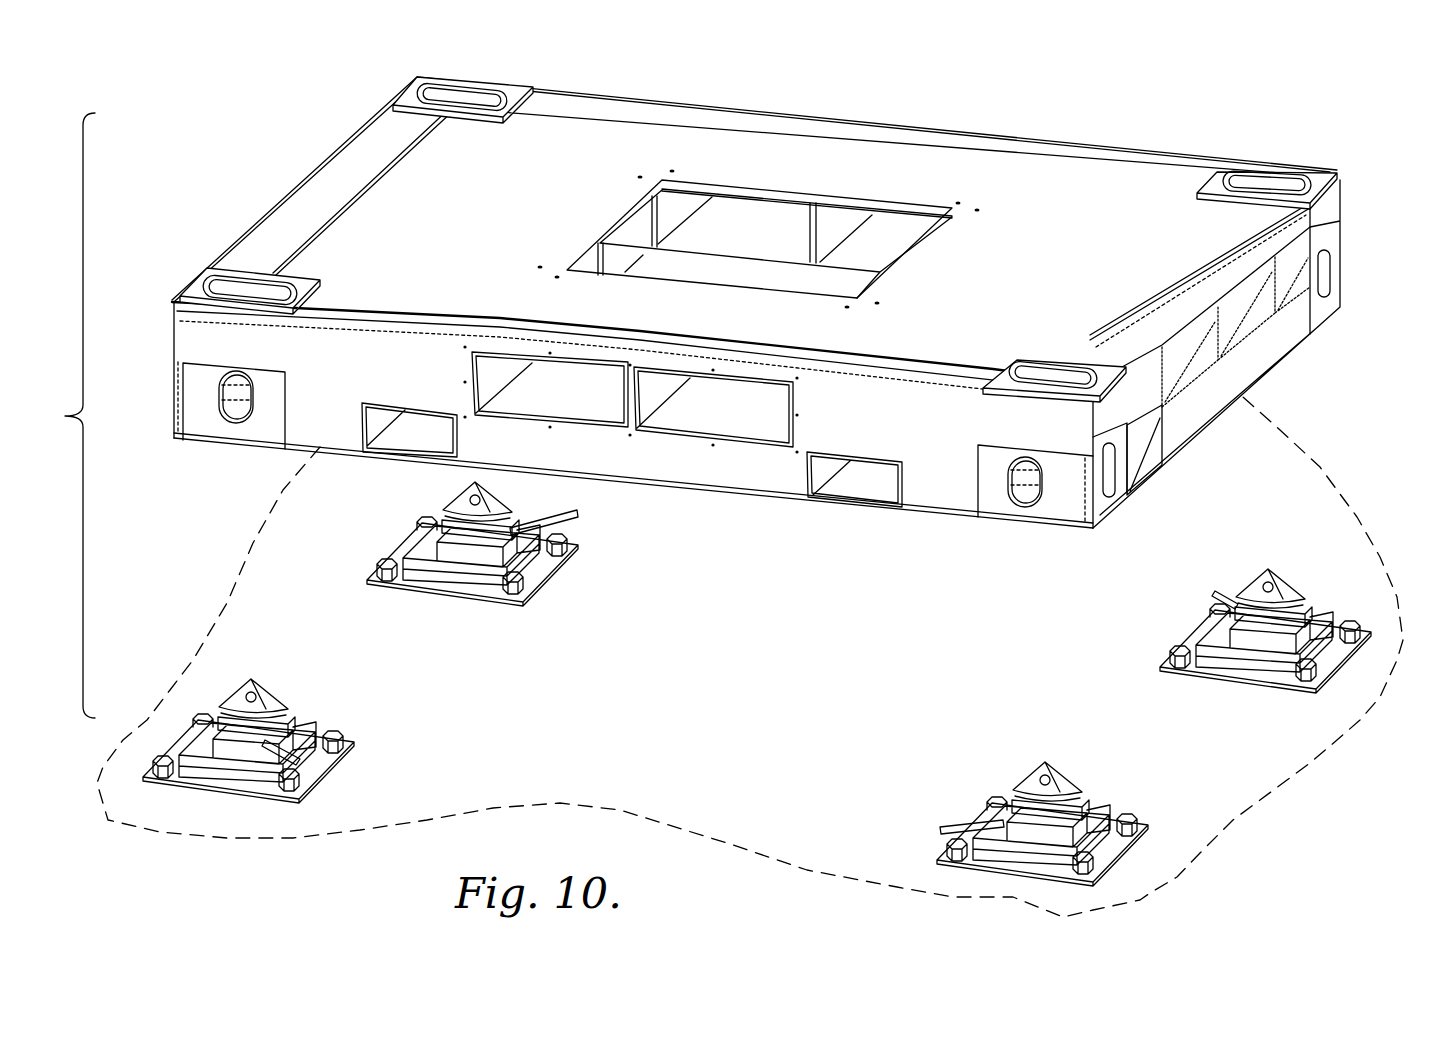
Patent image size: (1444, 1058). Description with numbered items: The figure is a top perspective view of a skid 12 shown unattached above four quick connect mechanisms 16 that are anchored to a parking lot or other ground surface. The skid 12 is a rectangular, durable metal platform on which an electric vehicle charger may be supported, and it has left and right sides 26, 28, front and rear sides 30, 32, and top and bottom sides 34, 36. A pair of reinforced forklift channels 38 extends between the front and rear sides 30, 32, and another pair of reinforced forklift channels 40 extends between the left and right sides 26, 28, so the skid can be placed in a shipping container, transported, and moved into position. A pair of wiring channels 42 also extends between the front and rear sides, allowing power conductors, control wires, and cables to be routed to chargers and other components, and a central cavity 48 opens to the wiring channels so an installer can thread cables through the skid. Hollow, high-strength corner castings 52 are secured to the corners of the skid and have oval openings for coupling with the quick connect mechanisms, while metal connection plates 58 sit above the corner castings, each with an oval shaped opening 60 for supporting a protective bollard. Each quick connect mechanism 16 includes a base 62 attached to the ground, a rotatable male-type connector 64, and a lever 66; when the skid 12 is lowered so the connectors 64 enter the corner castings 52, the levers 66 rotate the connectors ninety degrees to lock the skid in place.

The skid 12 is at (875, 100).
The quick connect mechanism 16 is at (375, 722).
The left side 26 is at (280, 227).
The right side 28 is at (1248, 370).
The front side 30 is at (740, 475).
The rear side 32 is at (1008, 140).
The top side 34 is at (630, 130).
The bottom side 36 is at (925, 533).
The reinforced forklift channels 38 is at (405, 445).
The reinforced forklift channels 40 is at (1196, 350).
The wiring channels 42 is at (495, 373).
The central cavity 48 is at (716, 272).
The corner castings 52 is at (195, 415).
The connection plates 58 is at (520, 88).
The oval shaped opening 60 is at (1293, 180).
The base 62 is at (1065, 820).
The rotatable male-type connector 64 is at (1266, 578).
The lever 66 is at (577, 520).